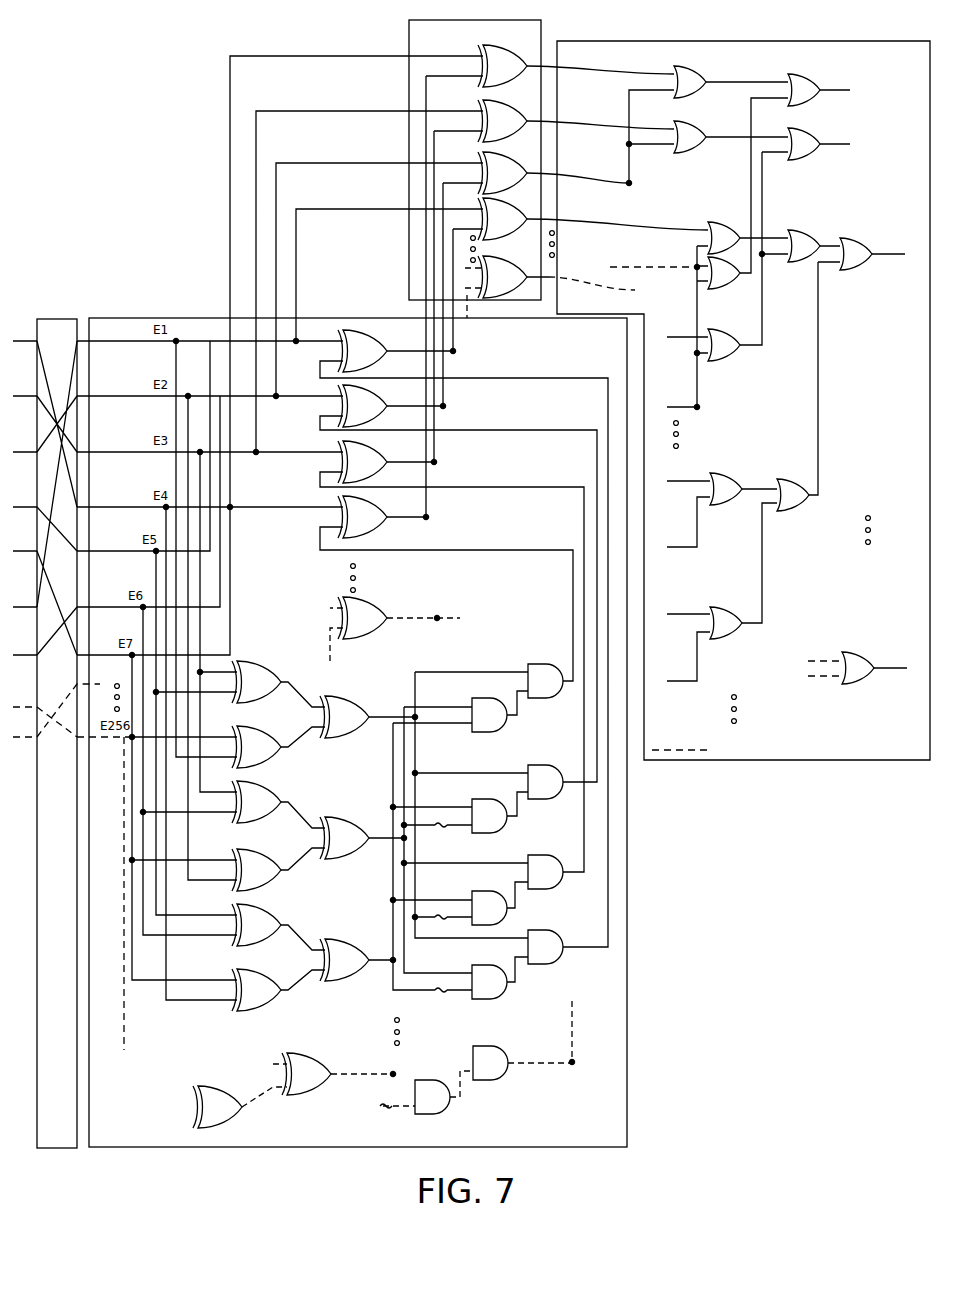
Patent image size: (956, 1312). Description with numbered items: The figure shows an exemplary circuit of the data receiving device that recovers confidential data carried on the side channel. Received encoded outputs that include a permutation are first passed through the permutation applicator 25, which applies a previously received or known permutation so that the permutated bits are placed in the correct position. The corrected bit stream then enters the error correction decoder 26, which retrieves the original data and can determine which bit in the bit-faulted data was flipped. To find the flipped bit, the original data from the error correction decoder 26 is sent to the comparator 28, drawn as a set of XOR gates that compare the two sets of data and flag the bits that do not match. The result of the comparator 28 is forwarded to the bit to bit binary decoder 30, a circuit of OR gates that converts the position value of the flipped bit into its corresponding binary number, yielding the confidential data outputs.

The permutation applicator 25 is at (55, 733).
The error correction decoder 26 is at (352, 601).
The comparator 28 is at (485, 169).
The bit to bit binary decoder 30 is at (743, 400).